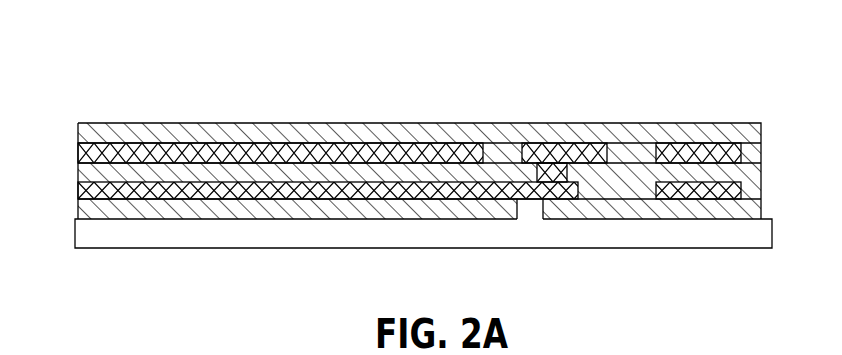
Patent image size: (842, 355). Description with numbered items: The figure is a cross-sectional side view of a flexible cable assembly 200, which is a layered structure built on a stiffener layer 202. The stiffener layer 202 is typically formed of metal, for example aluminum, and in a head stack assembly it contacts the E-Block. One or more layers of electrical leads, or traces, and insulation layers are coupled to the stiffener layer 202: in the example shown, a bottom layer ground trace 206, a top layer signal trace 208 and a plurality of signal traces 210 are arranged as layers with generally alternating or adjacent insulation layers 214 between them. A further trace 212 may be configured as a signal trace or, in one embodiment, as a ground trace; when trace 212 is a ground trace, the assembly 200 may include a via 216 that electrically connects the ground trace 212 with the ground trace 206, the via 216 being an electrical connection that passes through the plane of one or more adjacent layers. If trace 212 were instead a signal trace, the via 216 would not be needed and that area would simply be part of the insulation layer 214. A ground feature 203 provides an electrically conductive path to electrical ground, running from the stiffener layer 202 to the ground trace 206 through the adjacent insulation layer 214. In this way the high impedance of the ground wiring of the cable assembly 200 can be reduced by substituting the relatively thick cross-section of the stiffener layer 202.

The flexible cable assembly 200 is at (186, 66).
The stiffener layer 202 is at (765, 233).
The ground feature 203 is at (532, 210).
The bottom layer ground trace 206 is at (86, 190).
The top layer signal trace 208 is at (82, 152).
The signal traces 210 is at (736, 189).
The trace 212 is at (556, 165).
The insulation layers 214 is at (84, 133).
The via 216 is at (535, 168).